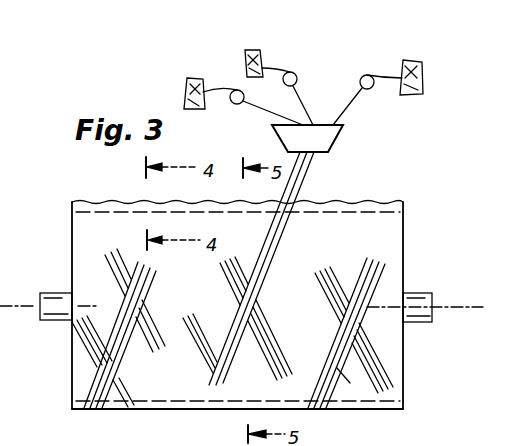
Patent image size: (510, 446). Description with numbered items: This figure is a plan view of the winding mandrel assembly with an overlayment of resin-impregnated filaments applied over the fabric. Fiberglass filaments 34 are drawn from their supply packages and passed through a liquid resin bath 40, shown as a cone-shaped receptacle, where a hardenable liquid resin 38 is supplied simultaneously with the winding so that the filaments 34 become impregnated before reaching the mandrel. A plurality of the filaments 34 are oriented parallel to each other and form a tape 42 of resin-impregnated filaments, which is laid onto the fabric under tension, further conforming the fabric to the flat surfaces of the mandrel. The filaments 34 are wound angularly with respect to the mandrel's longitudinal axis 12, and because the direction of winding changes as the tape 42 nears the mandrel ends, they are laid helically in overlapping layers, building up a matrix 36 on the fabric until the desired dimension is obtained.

The longitudinal axis 12 is at (20, 303).
The fiberglass filaments 34 is at (307, 87).
The matrix 36 is at (88, 201).
The hardenable liquid resin 38 is at (297, 118).
The liquid resin bath 40 is at (326, 133).
The tape 42 is at (308, 175).